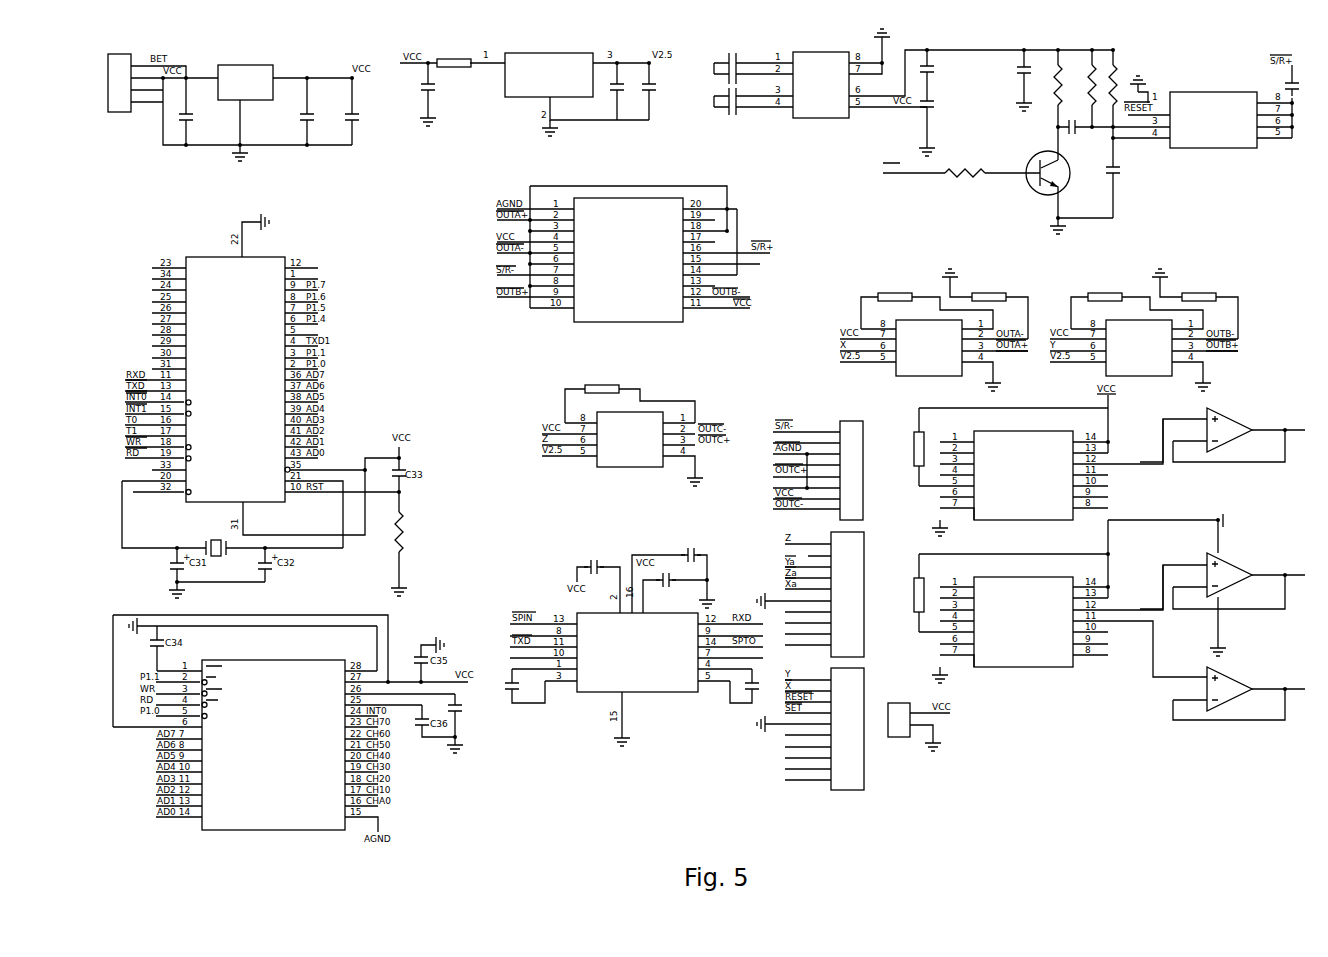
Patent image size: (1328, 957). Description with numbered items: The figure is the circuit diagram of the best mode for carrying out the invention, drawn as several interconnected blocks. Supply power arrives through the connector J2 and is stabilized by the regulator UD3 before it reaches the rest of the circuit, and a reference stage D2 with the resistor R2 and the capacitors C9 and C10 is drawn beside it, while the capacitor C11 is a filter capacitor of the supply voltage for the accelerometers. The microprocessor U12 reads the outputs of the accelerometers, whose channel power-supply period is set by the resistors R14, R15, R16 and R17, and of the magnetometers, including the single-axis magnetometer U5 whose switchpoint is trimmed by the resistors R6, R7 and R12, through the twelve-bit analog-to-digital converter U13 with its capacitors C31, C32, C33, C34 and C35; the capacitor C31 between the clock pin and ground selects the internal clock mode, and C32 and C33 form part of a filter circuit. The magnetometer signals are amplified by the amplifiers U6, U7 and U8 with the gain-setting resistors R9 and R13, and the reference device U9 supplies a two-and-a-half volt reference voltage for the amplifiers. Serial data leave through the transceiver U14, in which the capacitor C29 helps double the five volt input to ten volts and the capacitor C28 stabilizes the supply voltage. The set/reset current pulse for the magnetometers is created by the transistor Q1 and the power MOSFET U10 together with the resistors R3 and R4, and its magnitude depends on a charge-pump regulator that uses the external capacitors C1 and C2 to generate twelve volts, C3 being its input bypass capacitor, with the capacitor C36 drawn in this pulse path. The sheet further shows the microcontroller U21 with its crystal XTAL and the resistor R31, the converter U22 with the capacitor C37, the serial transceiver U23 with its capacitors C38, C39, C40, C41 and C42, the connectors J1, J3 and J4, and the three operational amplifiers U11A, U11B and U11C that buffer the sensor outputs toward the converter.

The power input connector CON4 J2 is at (119, 84).
The 78D05 voltage regulator UD3 is at (247, 87).
The external capacitor C1 is at (194, 111).
The external capacitor C2 is at (319, 111).
The input bypass capacitor C3 is at (359, 111).
The resistor R2 is at (454, 57).
The capacitor C9 is at (435, 86).
The D025 reference regulator D2 is at (549, 65).
The capacitor C10 is at (625, 91).
The filter capacitor C11 is at (658, 91).
The RS-232 transceiver U14 is at (821, 74).
The supply stabilizing capacitor C28 is at (753, 62).
The charge-pump capacitor C29 is at (752, 107).
The filter capacitor C32 is at (936, 72).
The clock-mode capacitor C31 is at (936, 115).
The resistor R17 is at (954, 167).
The filter capacitor C33 is at (1032, 72).
The resistor R14 is at (1067, 105).
The resistor R15 is at (1101, 88).
The resistor R16 is at (1122, 105).
The capacitor C36 is at (1114, 121).
The transistor Q1 is at (1048, 177).
The capacitor C34 is at (1121, 188).
The 12 bit A/D converter U13 is at (1213, 120).
The capacitor C35 is at (1301, 86).
The amplifier U8 is at (628, 262).
The Intel 8052 microcontroller U21 is at (235, 379).
The crystal oscillator XTAL is at (232, 518).
The resistor R31 is at (409, 532).
The BB567 analog-to-digital converter U22 is at (273, 745).
The capacitor C37 is at (464, 715).
The single-axis magnetometer U5 is at (630, 440).
The gain-setting resistor R9 is at (630, 399).
The TL202 RS-232 transceiver U23 is at (637, 641).
The capacitor C38 is at (525, 686).
The capacitor C39 is at (754, 686).
The capacitor C40 is at (598, 583).
The capacitor C41 is at (669, 576).
The capacitor C42 is at (675, 584).
The reference-voltage supply U9 is at (851, 464).
The M101 connector J4 is at (856, 588).
The connector J3 is at (847, 723).
The power connector J1 is at (899, 714).
The amplifier U7 is at (929, 349).
The resistor R3 is at (886, 305).
The resistor R4 is at (989, 310).
The amplifier U6 is at (1139, 349).
The switchpoint trim resistor R6 is at (1096, 305).
The switchpoint trim resistor R7 is at (1199, 310).
The microprocessor U12 is at (1023, 476).
The gain-setting resistor R13 is at (1011, 447).
The HEXFET power MOSFET U10 is at (1023, 623).
The switchpoint trim resistor R12 is at (1011, 593).
The TL404 op-amp U11C is at (1222, 427).
The TL404 op-amp U11A is at (1222, 585).
The TL404 op-amp U11B is at (1237, 686).